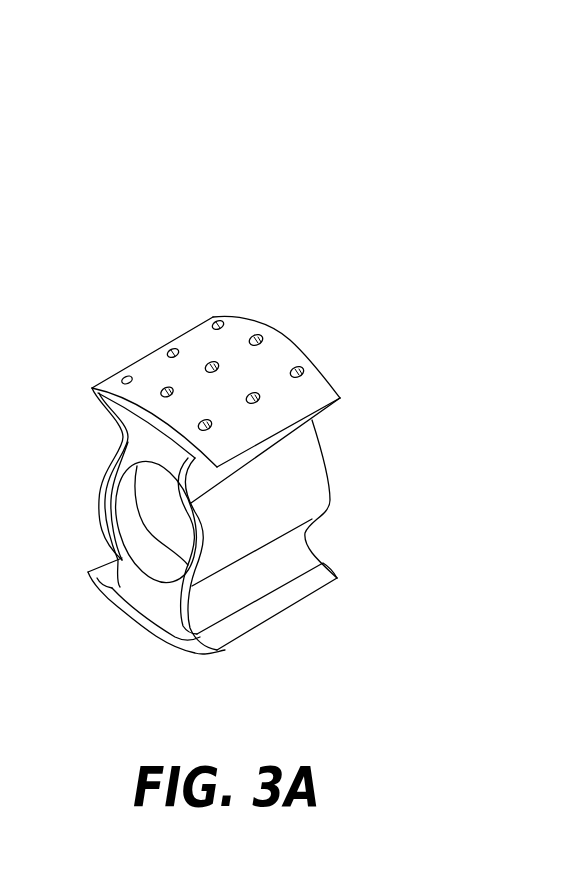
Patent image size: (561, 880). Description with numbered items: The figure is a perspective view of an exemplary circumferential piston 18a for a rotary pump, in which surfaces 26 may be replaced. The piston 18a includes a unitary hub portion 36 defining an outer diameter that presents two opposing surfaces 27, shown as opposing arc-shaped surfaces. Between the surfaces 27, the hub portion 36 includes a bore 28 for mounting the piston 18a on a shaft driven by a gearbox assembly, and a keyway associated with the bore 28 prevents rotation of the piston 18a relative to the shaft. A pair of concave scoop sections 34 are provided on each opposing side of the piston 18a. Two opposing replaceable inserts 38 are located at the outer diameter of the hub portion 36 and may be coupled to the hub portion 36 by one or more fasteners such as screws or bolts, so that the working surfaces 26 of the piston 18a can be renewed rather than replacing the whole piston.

The piston 18a is at (256, 132).
The surfaces 26 is at (244, 286).
The opposing surfaces 27 is at (96, 389).
The bore 28 is at (133, 527).
The concave scoop sections 34 is at (306, 423).
The hub portion 36 is at (437, 418).
The replaceable inserts 38 is at (312, 362).